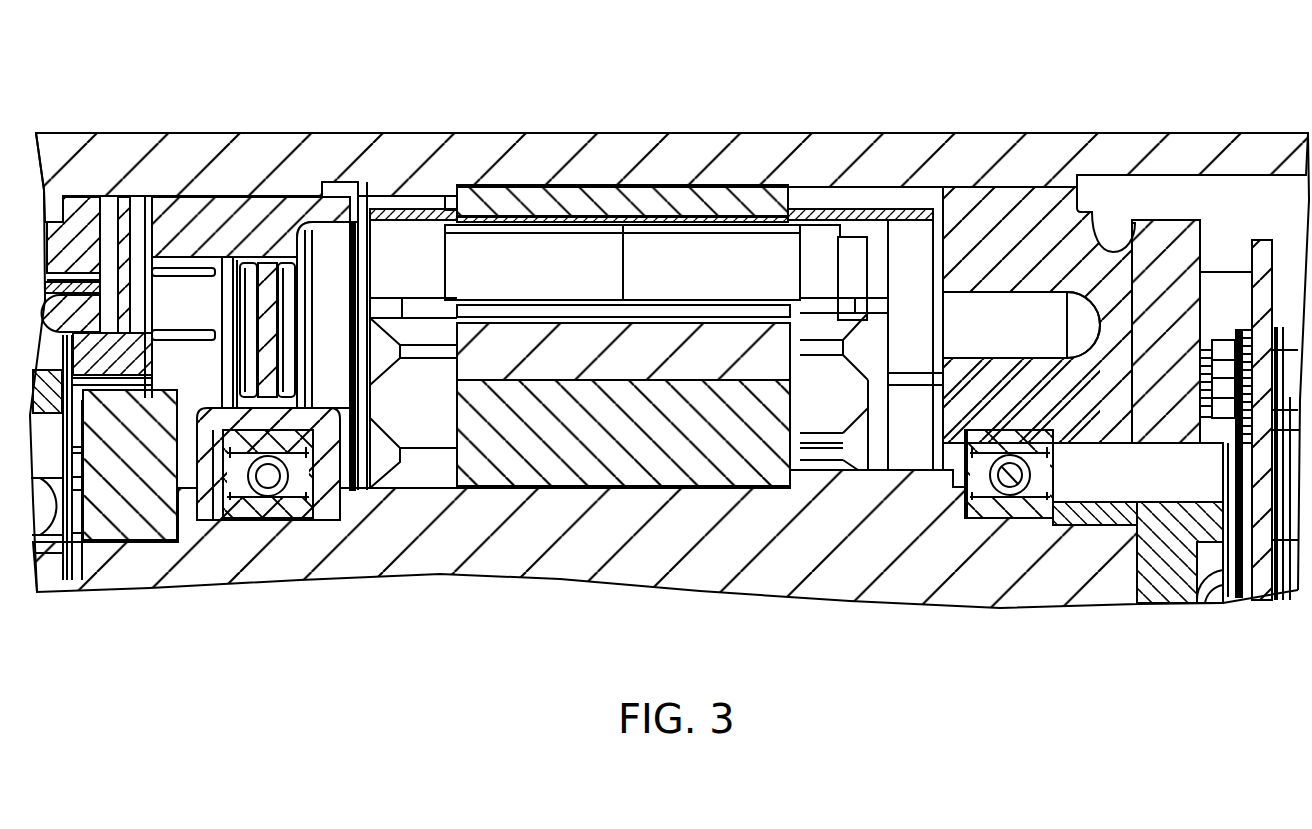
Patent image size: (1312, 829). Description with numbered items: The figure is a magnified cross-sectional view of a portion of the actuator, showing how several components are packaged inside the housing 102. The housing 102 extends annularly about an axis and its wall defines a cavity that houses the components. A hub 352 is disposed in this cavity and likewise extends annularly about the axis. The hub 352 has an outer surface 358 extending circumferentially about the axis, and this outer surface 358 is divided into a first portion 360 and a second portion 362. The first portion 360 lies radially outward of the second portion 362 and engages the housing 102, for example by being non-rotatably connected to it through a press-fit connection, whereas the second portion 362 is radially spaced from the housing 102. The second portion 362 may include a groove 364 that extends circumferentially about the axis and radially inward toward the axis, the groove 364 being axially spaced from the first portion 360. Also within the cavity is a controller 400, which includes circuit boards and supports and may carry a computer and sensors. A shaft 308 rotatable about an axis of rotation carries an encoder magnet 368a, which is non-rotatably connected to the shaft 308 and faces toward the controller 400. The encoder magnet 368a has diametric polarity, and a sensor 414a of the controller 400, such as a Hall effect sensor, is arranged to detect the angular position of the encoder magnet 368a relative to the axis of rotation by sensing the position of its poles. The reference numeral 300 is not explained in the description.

The housing 102 is at (928, 125).
The motor assembly 300 is at (661, 275).
The shaft 308 is at (707, 484).
The hub 352 is at (1039, 297).
The outer surface 358 is at (1045, 183).
The first portion 360 is at (945, 232).
The second portion 362 is at (1200, 263).
The groove 364 is at (1063, 293).
The encoder magnet 368a is at (1218, 568).
The controller 400 is at (1176, 370).
The sensor 414a is at (1248, 565).